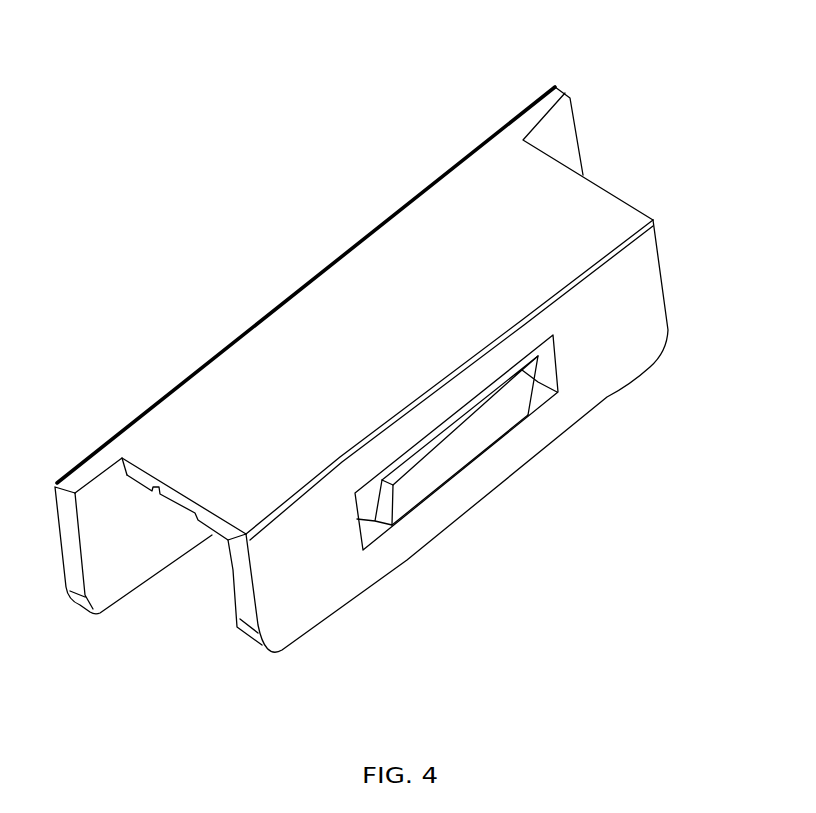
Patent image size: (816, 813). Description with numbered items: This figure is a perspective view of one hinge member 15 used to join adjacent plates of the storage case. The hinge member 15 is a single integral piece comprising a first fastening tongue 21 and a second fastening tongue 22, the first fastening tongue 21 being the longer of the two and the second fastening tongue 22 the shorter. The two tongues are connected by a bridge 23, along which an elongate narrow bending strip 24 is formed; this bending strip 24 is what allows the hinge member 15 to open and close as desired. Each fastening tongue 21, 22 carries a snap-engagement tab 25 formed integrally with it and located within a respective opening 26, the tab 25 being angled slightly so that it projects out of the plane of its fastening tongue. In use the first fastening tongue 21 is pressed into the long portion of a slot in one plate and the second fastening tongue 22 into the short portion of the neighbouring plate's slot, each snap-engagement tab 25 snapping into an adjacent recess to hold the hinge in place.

The hinge member 15 is at (183, 183).
The first fastening tongue 21 is at (560, 88).
The second fastening tongue 22 is at (643, 287).
The bridge 23 is at (330, 300).
The bending strip 24 is at (168, 493).
The snap-engagement tab 25 is at (487, 435).
The opening 26 is at (363, 498).